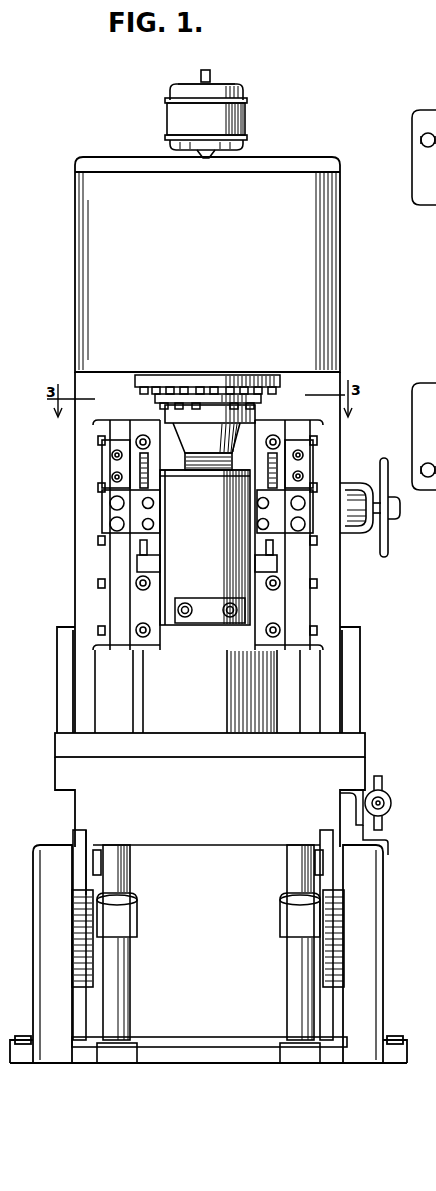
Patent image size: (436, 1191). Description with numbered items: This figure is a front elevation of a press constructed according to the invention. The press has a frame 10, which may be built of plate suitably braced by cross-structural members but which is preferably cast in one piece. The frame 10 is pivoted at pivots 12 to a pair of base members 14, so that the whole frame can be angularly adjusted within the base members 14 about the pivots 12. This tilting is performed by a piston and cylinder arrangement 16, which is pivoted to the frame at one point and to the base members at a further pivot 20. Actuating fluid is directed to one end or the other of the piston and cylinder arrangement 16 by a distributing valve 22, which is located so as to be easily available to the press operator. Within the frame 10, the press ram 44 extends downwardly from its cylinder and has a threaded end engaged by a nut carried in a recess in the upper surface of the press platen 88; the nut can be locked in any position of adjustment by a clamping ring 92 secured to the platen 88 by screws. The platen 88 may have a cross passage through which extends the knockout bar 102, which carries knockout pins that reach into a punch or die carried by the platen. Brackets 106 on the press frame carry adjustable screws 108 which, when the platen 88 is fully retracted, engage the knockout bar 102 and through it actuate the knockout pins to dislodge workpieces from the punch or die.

The frame 10 is at (236, 803).
The pivot 12 is at (100, 845).
The base members 14 is at (64, 980).
The piston and cylinder arrangement 16 is at (131, 880).
The pivot on base members 20 is at (227, 1033).
The distributing valve 22 is at (392, 803).
The press ram 44 is at (220, 422).
The press platen 88 is at (228, 536).
The clamping ring 92 is at (216, 471).
The knockout bar 102 is at (160, 564).
The brackets 106 is at (310, 505).
The adjustable screws 108 is at (277, 470).